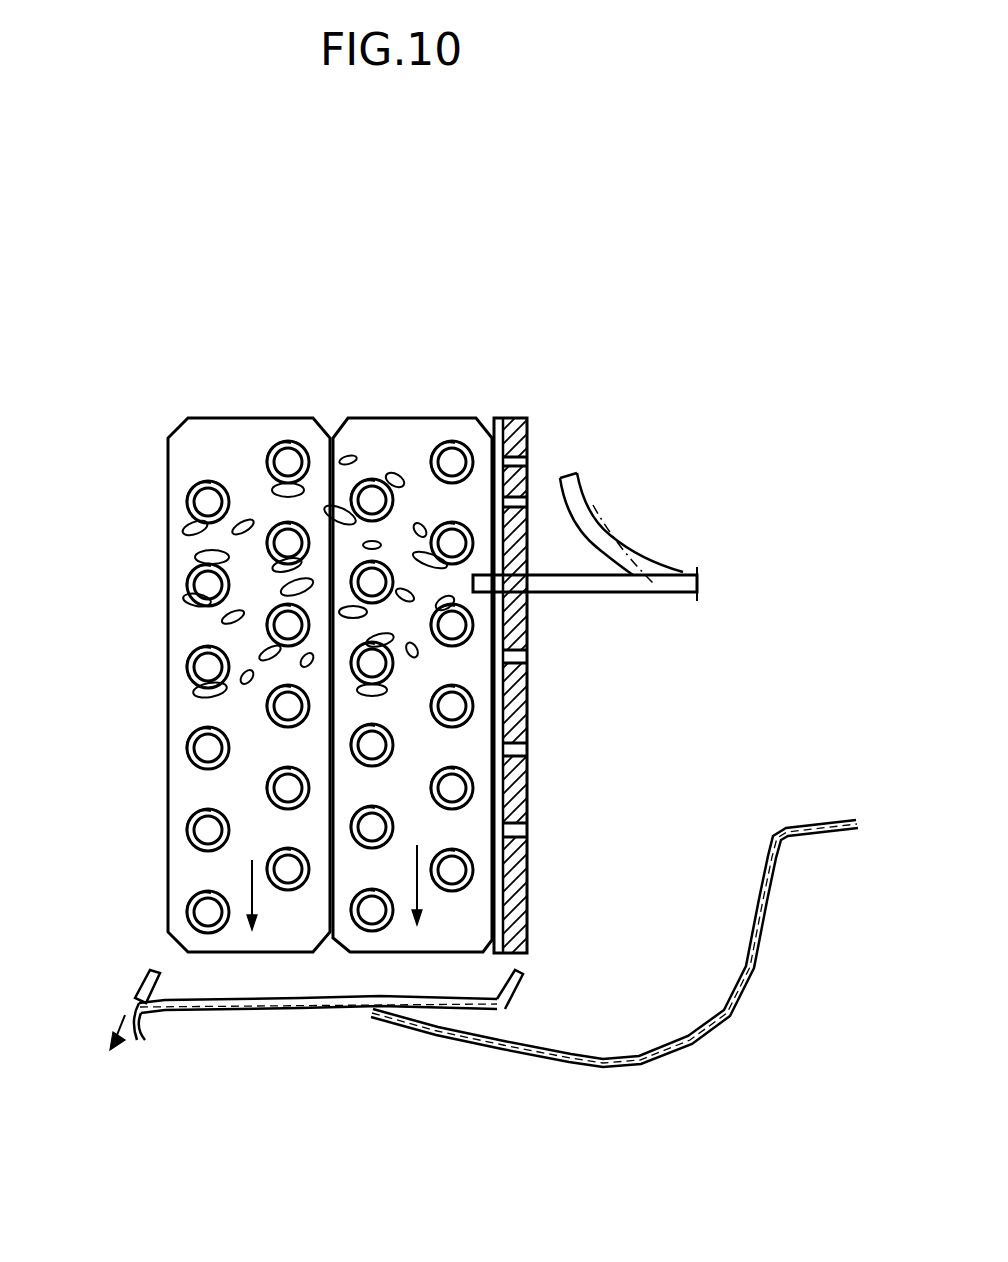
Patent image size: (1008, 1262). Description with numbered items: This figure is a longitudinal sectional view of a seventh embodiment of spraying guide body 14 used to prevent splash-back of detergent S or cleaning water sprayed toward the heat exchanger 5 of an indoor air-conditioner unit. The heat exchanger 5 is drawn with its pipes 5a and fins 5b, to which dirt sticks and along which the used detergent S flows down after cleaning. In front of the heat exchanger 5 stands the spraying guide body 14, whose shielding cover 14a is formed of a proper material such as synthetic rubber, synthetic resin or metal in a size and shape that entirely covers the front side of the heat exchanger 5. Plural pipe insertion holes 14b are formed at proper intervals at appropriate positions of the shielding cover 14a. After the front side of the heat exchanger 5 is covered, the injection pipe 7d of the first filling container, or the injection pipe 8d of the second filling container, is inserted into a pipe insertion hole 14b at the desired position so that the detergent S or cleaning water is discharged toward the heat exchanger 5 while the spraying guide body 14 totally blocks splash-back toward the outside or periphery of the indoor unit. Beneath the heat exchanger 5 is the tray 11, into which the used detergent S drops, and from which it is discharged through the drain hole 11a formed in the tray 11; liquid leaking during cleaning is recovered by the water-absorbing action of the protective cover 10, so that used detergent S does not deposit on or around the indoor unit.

The heat exchanger 5 is at (228, 383).
The pipes 5a is at (186, 755).
The fins 5b is at (180, 468).
The detergent S is at (392, 472).
The spraying guide body 14 is at (597, 664).
The shielding cover 14a is at (520, 902).
The pipe insertion holes 14b is at (527, 667).
The injection pipe 7d is at (670, 592).
The injection pipe 8d is at (633, 500).
The protective cover 10 is at (757, 983).
The tray 11 is at (302, 1005).
The drain hole 11a is at (145, 995).